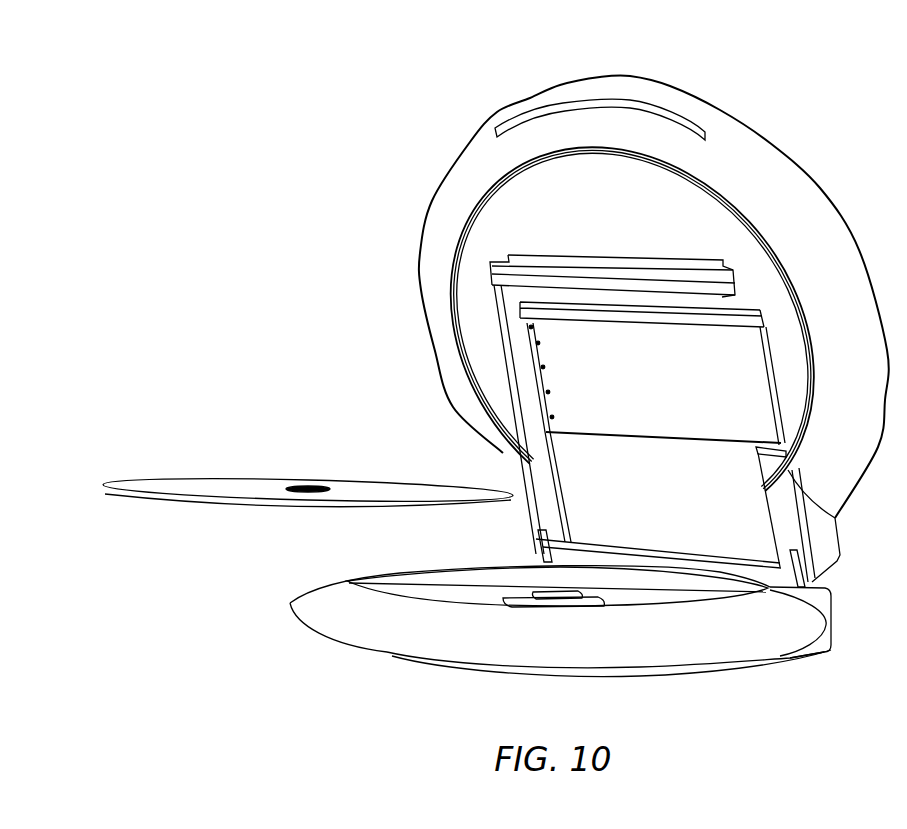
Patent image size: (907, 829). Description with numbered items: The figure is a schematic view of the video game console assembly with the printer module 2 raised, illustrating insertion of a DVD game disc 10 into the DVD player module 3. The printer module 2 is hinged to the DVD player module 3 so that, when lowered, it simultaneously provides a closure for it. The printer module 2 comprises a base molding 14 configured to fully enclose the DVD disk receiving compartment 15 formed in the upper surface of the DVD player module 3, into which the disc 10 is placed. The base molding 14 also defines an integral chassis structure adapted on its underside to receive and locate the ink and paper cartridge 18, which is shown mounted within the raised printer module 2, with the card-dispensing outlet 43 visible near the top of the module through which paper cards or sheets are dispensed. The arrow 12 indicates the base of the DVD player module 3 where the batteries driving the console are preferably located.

The printer module 2 is at (463, 147).
The DVD player module 3 is at (502, 639).
The DVD game disc 10 is at (390, 481).
The arrow indicating battery location 12 is at (665, 686).
The base molding 14 is at (507, 218).
The DVD disk receiving compartment 15 is at (451, 597).
The ink and paper cartridge 18 is at (700, 384).
The card-dispensing outlet 43 is at (630, 108).